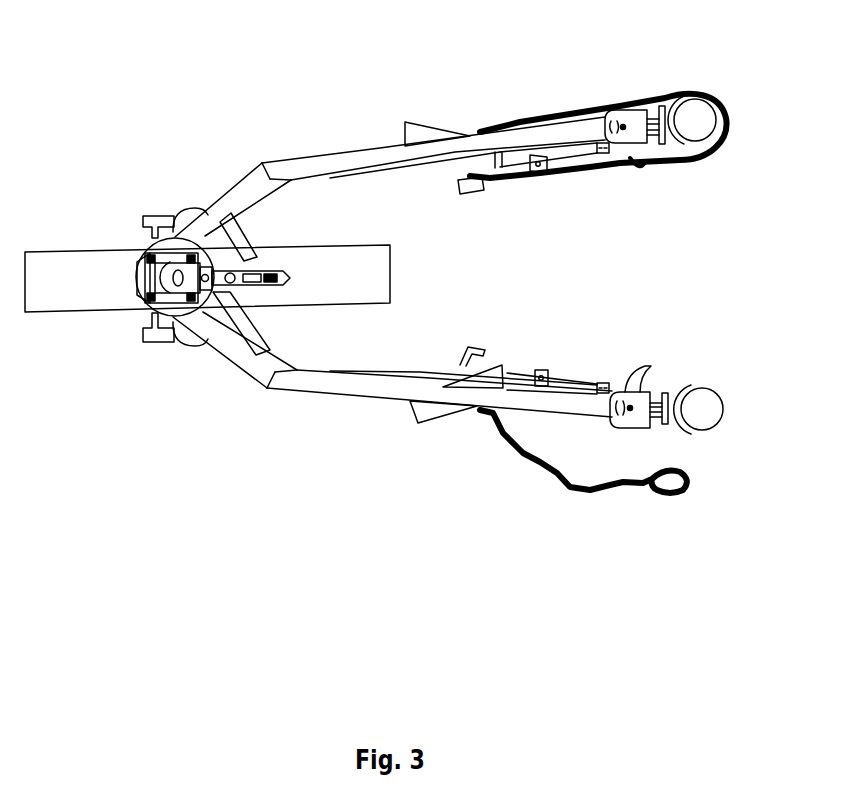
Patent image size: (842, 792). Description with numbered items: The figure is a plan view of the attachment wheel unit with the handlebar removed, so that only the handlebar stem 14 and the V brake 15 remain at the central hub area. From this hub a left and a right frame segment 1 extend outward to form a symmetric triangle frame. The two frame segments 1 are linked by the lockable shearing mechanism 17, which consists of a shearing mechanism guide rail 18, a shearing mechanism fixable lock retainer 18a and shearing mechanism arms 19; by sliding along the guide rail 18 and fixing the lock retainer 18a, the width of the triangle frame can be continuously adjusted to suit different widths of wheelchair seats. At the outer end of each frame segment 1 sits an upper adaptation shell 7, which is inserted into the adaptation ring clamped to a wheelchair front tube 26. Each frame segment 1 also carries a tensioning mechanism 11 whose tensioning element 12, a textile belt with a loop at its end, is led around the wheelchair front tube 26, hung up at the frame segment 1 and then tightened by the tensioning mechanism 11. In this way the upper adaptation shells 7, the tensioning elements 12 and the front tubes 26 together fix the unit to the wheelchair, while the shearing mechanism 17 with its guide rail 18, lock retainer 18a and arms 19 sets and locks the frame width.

The frame segment 1 is at (343, 160).
The upper adaptation shell 7 is at (673, 145).
The tensioning mechanism 11 is at (426, 131).
The tensioning element with loop 12 is at (597, 110).
The handlebar stem 14 is at (143, 272).
The V brake 15 is at (158, 216).
The shearing mechanism 17 is at (283, 278).
The shearing mechanism guide rail 18 is at (285, 270).
The shearing mechanism fixable lock retainer 18a is at (233, 280).
The shearing mechanism arm 19 is at (232, 238).
The wheelchair front tube 26 is at (715, 407).